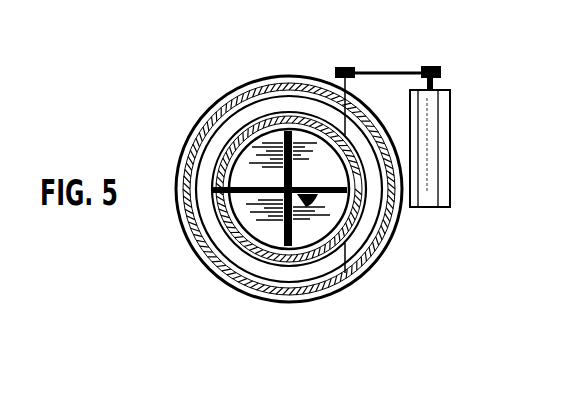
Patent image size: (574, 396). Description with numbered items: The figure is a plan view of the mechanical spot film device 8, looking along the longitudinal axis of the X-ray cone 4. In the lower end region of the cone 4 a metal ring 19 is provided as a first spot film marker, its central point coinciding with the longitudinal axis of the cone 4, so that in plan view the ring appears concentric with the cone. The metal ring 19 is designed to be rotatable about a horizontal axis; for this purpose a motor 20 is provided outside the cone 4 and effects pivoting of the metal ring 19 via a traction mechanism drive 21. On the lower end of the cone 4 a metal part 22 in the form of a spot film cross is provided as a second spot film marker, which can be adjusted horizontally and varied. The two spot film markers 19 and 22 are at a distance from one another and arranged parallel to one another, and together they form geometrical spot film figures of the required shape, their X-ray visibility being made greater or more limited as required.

The X-ray cone 4 is at (187, 160).
The mechanical spot film device 8 is at (296, 192).
The metal ring 19 is at (257, 157).
The motor 20 is at (432, 142).
The traction mechanism drive 21 is at (380, 72).
The metal part 22 is at (228, 190).